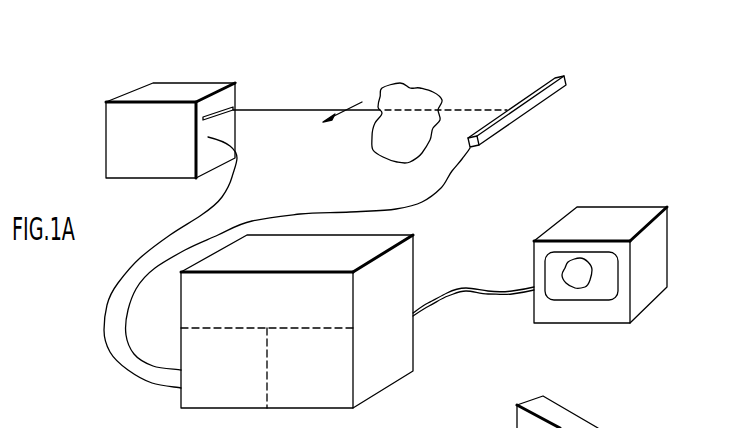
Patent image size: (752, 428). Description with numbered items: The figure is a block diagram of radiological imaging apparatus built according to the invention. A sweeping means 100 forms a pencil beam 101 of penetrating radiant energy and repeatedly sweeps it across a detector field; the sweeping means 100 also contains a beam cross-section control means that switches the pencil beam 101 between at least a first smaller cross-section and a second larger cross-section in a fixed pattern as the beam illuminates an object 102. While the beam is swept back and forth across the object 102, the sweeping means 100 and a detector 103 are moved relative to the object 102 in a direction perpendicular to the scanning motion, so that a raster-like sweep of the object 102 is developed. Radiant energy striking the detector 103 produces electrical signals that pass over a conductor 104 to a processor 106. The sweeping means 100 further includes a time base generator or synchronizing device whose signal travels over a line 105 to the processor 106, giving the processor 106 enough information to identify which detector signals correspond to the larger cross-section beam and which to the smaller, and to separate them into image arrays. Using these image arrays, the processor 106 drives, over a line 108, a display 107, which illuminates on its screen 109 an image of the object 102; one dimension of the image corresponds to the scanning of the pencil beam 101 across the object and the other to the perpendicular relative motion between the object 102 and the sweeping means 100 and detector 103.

The sweeping means 100 is at (217, 84).
The pencil beam 101 is at (312, 106).
The object 102 is at (433, 92).
The detector 103 is at (564, 77).
The conductor 104 is at (430, 190).
The line 105 is at (157, 237).
The processor 106 is at (413, 267).
The display 107 is at (640, 194).
The line 108 is at (465, 294).
The screen 109 is at (605, 275).